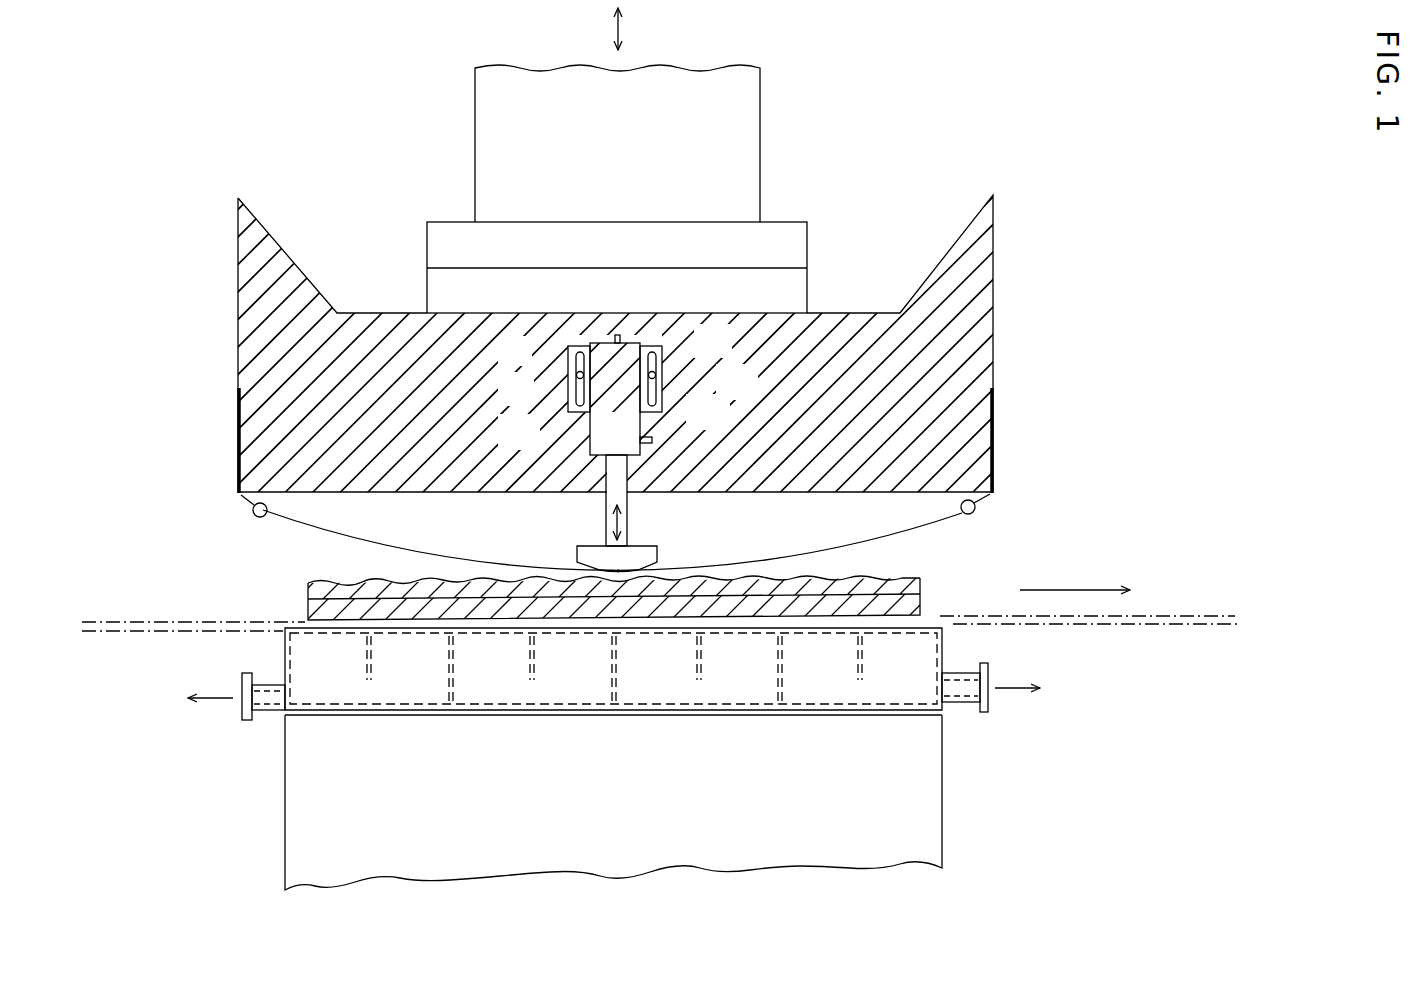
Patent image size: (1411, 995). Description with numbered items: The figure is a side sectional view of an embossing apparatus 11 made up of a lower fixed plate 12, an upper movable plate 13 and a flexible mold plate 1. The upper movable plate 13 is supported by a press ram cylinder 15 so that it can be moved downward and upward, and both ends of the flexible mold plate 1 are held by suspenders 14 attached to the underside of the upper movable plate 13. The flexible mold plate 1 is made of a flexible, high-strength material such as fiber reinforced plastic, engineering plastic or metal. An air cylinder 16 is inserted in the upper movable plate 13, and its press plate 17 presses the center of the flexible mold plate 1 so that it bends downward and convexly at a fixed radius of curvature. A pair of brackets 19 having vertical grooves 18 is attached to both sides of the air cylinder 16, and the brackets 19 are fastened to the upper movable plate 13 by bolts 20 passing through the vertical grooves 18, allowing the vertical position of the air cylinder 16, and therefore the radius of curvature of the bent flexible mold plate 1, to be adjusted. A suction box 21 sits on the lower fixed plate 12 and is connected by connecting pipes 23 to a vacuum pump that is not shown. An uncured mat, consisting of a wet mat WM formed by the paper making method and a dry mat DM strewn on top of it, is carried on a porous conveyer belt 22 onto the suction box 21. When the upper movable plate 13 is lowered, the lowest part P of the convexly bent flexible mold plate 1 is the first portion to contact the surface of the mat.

The flexible mold plate 1 is at (710, 567).
The embossing apparatus 11 is at (1012, 255).
The lower fixed plate 12 is at (930, 800).
The upper movable plate 13 is at (958, 313).
The suspenders 14 is at (250, 505).
The press ram cylinder 15 is at (740, 112).
The air cylinder 16 is at (598, 447).
The press plate 17 is at (632, 557).
The vertical grooves 18 is at (568, 356).
The brackets 19 is at (577, 371).
The bolts 20 is at (570, 402).
The suction box 21 is at (740, 683).
The porous conveyer belt 22 is at (1125, 620).
The connecting pipes 23 is at (268, 683).
The lowest part of flexible mold plate P is at (618, 571).
The dry mat DM is at (332, 583).
The wet mat WM is at (317, 607).